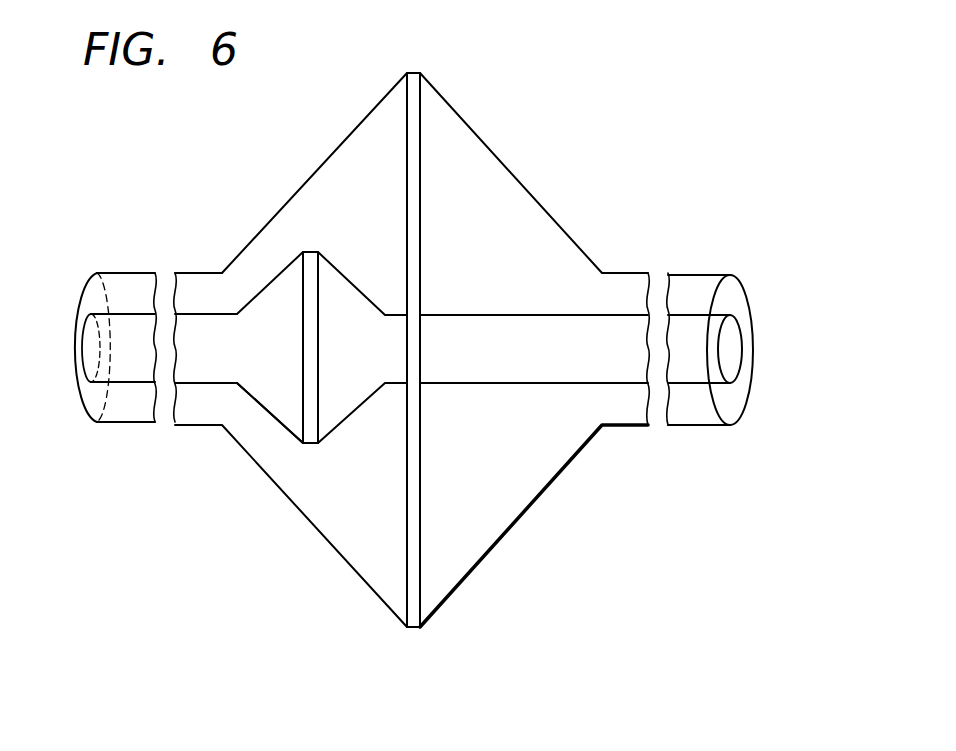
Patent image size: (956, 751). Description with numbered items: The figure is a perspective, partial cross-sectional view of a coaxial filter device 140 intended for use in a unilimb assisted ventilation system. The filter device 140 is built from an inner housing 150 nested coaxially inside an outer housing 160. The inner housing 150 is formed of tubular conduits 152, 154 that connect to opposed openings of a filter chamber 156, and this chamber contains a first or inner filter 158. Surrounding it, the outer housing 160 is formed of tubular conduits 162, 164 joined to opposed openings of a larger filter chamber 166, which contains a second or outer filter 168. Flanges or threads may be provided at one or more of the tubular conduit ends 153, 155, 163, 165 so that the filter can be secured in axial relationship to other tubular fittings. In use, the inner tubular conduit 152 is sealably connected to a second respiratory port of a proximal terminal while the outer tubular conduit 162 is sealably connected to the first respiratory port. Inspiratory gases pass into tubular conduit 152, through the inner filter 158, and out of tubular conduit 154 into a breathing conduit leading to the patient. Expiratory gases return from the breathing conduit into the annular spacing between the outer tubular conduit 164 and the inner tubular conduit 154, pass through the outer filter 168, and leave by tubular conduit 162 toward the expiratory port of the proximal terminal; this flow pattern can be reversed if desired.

The coaxial filter device 140 is at (553, 180).
The inner housing 150 is at (566, 362).
The tubular conduit 152 is at (690, 373).
The tubular conduit end 153 is at (743, 363).
The tubular conduit 154 is at (133, 365).
The tubular conduit end 155 is at (82, 367).
The filter chamber 156 is at (285, 407).
The inner filter 158 is at (310, 445).
The outer housing 160 is at (492, 212).
The tubular conduit 162 is at (670, 284).
The tubular conduit end 163 is at (745, 289).
The tubular conduit 164 is at (135, 290).
The tubular conduit end 165 is at (80, 286).
The filter chamber 166 is at (378, 128).
The outer filter 168 is at (415, 75).